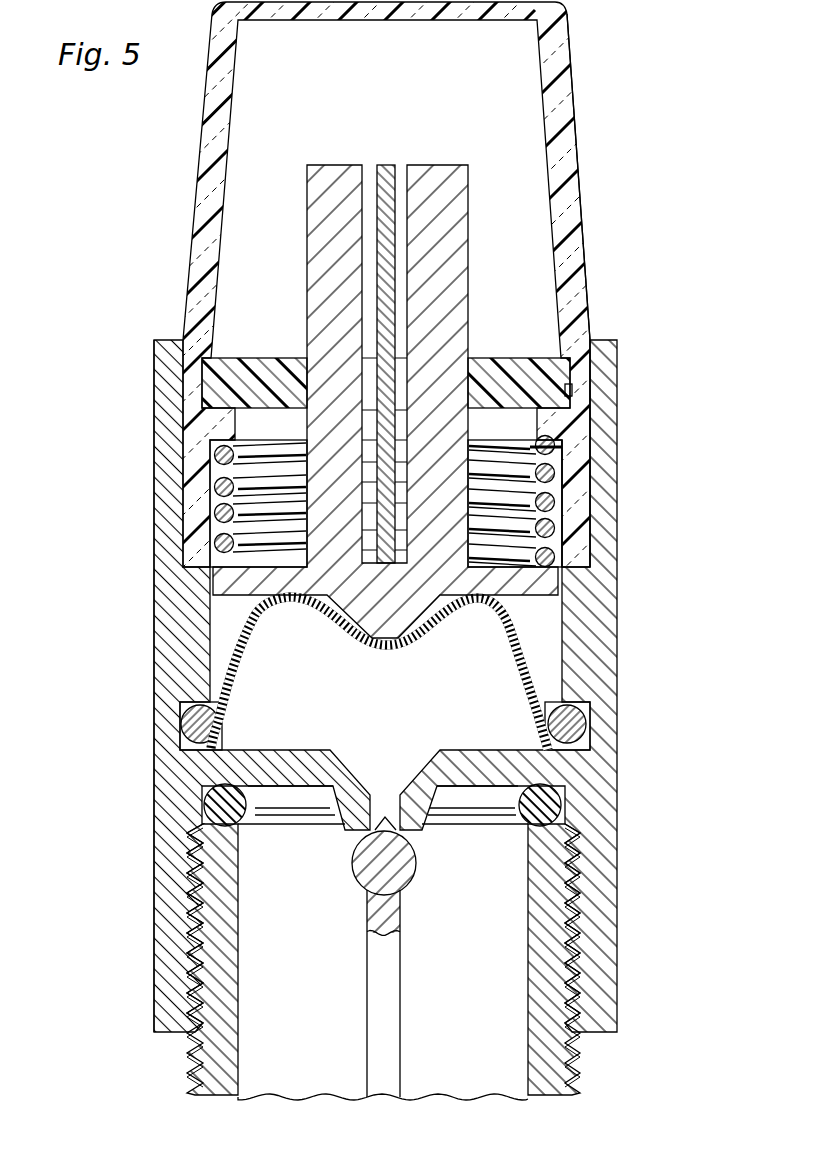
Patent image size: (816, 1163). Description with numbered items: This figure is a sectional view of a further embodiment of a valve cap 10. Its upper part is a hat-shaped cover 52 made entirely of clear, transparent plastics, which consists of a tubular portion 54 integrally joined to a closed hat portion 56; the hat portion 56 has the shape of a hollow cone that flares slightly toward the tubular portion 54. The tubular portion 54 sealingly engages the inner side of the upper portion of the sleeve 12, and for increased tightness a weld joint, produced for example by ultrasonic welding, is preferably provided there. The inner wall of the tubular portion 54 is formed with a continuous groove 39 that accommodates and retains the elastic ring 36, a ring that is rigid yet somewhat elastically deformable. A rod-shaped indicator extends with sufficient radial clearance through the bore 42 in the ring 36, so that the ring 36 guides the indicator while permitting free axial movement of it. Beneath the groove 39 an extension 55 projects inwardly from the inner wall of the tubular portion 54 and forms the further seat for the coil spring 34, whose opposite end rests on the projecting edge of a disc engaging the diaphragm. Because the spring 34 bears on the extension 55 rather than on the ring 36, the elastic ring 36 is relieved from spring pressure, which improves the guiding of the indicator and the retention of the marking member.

The valve cap 10 is at (125, 765).
The sleeve 12 is at (167, 637).
The coil spring 34 is at (555, 500).
The elastic ring 36 is at (253, 380).
The groove 39 is at (572, 395).
The bore 42 is at (307, 372).
The hat-shaped cover 52 is at (596, 151).
The tubular portion 54 is at (578, 465).
The extension 55 is at (543, 433).
The hat portion 56 is at (583, 232).